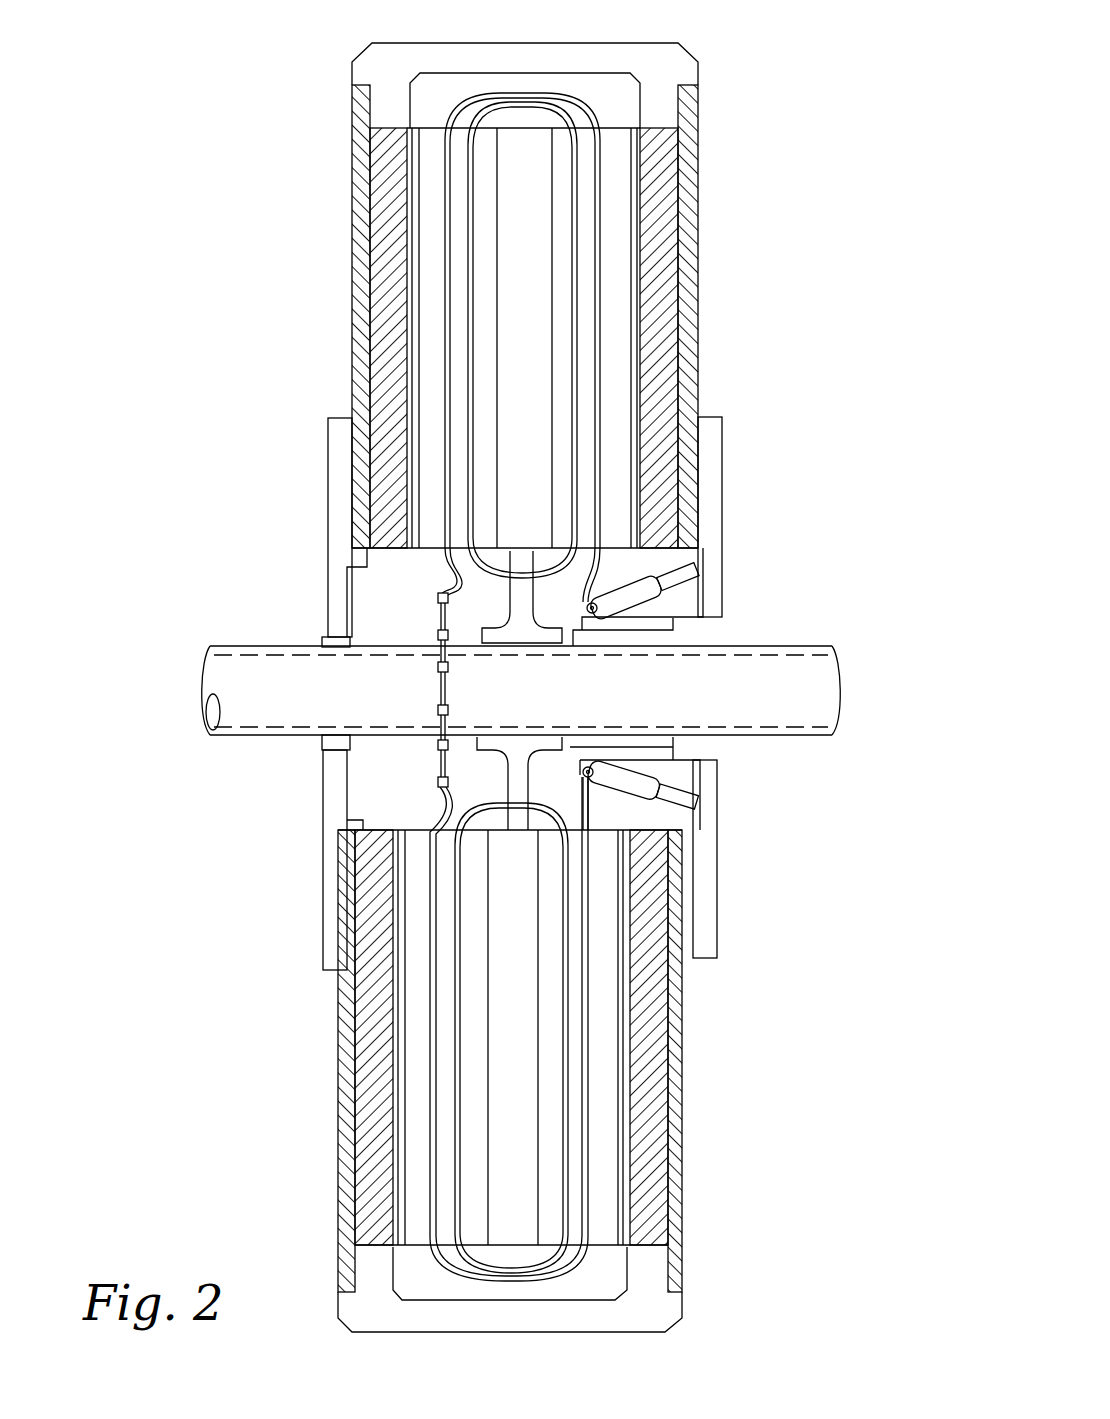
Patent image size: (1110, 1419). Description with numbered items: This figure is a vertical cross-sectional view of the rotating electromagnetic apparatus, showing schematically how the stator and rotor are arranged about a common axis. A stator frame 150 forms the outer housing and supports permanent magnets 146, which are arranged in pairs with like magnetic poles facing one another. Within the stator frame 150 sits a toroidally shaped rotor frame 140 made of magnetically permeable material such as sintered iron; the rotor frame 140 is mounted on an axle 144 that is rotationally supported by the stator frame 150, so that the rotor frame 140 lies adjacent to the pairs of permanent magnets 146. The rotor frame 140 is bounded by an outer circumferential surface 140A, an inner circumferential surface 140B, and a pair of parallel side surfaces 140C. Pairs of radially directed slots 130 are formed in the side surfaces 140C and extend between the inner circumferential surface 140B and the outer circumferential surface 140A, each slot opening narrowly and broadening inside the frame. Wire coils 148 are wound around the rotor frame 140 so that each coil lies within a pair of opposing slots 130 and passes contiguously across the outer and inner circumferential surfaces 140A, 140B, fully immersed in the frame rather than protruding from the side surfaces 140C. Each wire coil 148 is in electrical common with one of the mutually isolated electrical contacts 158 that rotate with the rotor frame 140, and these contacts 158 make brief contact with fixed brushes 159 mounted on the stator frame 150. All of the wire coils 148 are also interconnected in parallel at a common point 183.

The stator frame 150 is at (678, 46).
The permanent magnets 146 is at (375, 236).
The slots 130 is at (430, 275).
The wire coils 148 is at (575, 150).
The rotor frame 140 is at (528, 320).
The outer circumferential surface 140A is at (437, 128).
The inner circumferential surface 140B is at (430, 553).
The side surfaces 140C is at (395, 985).
The common point 183 is at (440, 690).
The axle 144 is at (265, 665).
The electrical contacts 158 is at (690, 565).
The brushes 159 is at (700, 597).